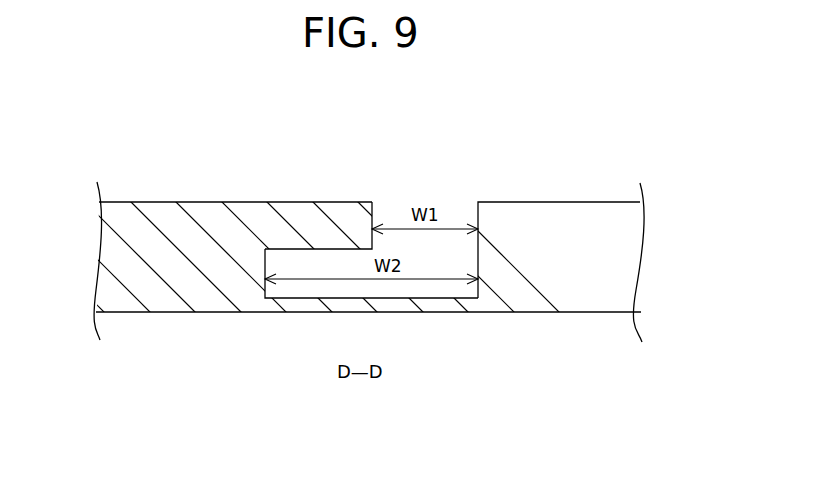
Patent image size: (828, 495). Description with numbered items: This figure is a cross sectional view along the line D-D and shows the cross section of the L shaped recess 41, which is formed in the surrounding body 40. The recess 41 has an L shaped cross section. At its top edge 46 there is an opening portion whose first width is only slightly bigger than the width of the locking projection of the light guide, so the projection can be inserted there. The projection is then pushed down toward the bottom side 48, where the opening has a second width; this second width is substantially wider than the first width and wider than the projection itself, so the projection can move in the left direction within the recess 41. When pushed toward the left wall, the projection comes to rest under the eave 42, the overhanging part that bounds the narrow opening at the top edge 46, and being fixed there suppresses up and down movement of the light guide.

The substrate body 40 is at (183, 201).
The L shaped recess 41 is at (433, 257).
The eave 42 is at (325, 212).
The top edge 46 is at (592, 202).
The bottom side 48 is at (553, 314).